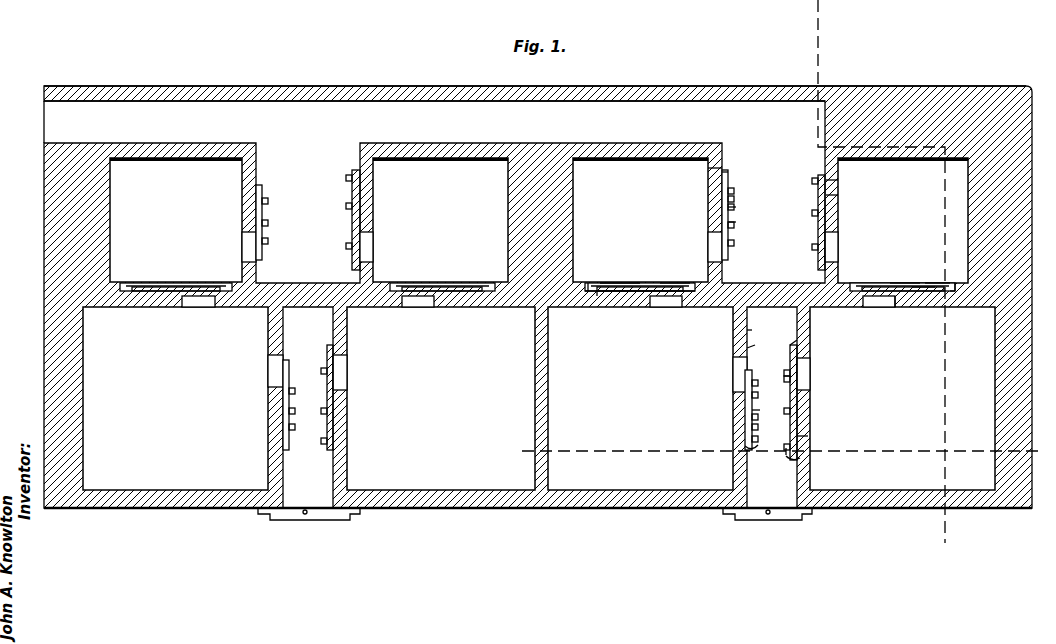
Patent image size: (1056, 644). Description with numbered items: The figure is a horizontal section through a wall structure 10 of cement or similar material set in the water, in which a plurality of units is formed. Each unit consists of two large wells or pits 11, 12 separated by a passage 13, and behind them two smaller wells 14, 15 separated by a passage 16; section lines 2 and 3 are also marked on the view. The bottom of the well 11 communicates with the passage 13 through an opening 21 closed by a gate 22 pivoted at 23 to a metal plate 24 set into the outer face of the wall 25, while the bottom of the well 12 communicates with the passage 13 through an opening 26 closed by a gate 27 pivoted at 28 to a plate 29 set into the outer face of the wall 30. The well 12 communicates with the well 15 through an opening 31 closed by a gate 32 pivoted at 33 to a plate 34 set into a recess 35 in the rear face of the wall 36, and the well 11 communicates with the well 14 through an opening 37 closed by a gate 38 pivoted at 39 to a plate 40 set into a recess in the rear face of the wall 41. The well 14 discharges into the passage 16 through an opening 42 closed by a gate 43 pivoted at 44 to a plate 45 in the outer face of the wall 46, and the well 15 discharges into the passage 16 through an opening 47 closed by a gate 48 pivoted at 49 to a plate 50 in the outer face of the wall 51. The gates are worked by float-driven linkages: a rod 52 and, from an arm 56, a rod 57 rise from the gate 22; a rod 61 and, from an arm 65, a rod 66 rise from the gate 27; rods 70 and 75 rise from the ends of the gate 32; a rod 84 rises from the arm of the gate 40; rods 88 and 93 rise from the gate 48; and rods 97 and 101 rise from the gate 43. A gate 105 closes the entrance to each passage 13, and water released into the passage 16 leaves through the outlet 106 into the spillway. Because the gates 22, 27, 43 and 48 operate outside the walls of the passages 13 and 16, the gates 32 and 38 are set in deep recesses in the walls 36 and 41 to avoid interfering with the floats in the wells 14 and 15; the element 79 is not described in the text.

The section line 2- 2 is at (780, 452).
The section line 3- 3 is at (881, 282).
The wall structure 10 is at (48, 250).
The well 11 is at (165, 478).
The well 12 is at (400, 480).
The passage 13 is at (306, 300).
The well 14 is at (178, 160).
The well 15 is at (422, 160).
The passage 16 is at (302, 185).
The opening 21 is at (270, 375).
The gate 22 is at (277, 400).
The pivot 23 is at (760, 412).
The metal plate 24 is at (755, 350).
The wall 25 is at (752, 332).
The opening 26 is at (343, 372).
The gate 27 is at (342, 420).
The pivot 28 is at (350, 197).
The plate 29 is at (800, 350).
The wall 30 is at (810, 437).
The opening 31 is at (410, 302).
The gate 32 is at (416, 292).
The pivot 33 is at (917, 285).
The plate 34 is at (935, 305).
The recess 35 is at (960, 278).
The wall 36 is at (972, 300).
The opening 37 is at (190, 307).
The gate 38 is at (180, 290).
The pivot 39 is at (622, 290).
The plate 40 is at (600, 298).
The wall 41 is at (612, 305).
The opening 42 is at (240, 237).
The gate 43 is at (262, 245).
The pivot 44 is at (732, 207).
The plate 45 is at (726, 175).
The wall 46 is at (710, 170).
The opening 47 is at (378, 240).
The gate 48 is at (822, 193).
The pivot 49 is at (815, 212).
The plate 50 is at (836, 180).
The wall 51 is at (836, 195).
The rod 52 is at (759, 388).
The arm 56 is at (740, 445).
The rod 57 is at (750, 425).
The rod 61 is at (800, 372).
The arm 65 is at (790, 458).
The rod 66 is at (782, 448).
The rod 70 is at (898, 280).
The rod 75 is at (930, 287).
The plate 79 is at (673, 290).
The rod 84 is at (590, 280).
The rod 88 is at (818, 247).
The rod 93 is at (813, 180).
The rod 97 is at (735, 222).
The rod 101 is at (732, 200).
The gate 105 is at (300, 518).
The outlet 106 is at (96, 100).